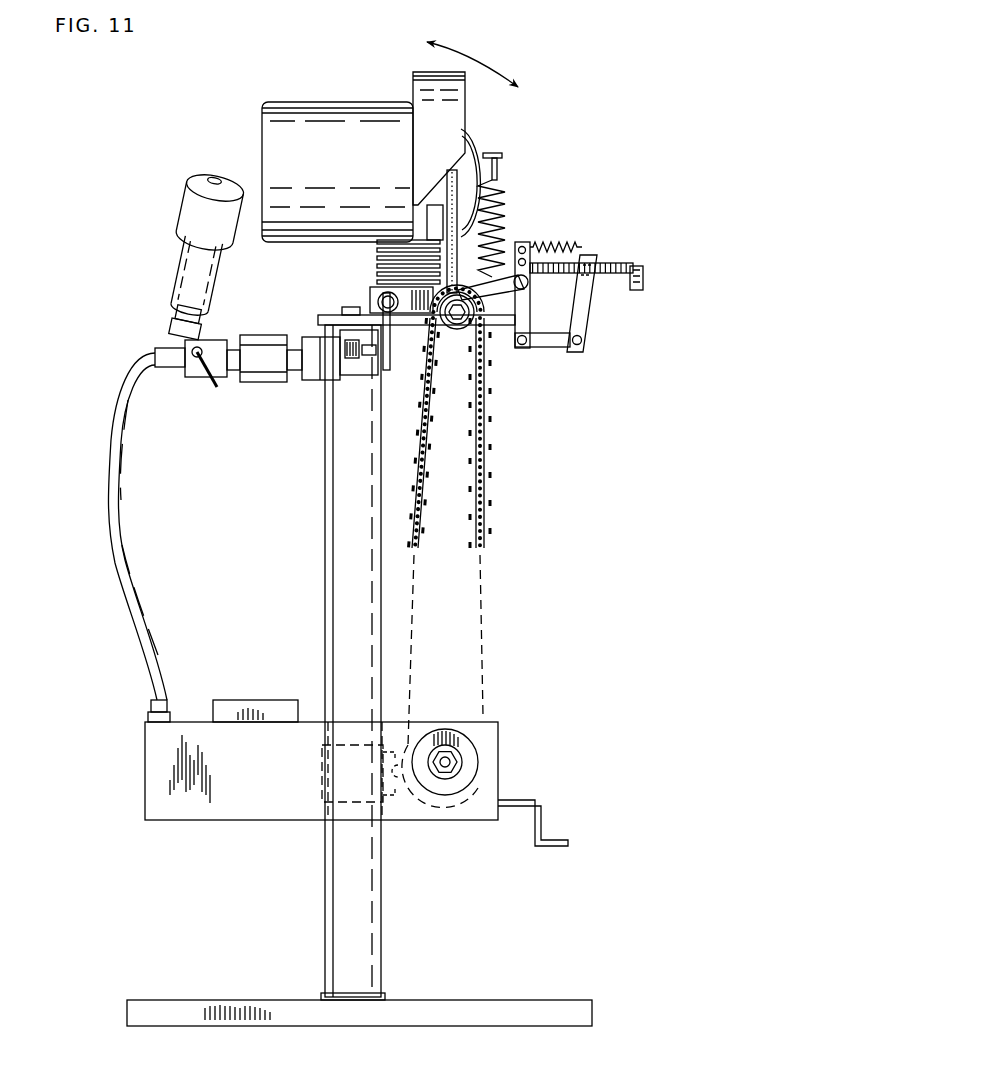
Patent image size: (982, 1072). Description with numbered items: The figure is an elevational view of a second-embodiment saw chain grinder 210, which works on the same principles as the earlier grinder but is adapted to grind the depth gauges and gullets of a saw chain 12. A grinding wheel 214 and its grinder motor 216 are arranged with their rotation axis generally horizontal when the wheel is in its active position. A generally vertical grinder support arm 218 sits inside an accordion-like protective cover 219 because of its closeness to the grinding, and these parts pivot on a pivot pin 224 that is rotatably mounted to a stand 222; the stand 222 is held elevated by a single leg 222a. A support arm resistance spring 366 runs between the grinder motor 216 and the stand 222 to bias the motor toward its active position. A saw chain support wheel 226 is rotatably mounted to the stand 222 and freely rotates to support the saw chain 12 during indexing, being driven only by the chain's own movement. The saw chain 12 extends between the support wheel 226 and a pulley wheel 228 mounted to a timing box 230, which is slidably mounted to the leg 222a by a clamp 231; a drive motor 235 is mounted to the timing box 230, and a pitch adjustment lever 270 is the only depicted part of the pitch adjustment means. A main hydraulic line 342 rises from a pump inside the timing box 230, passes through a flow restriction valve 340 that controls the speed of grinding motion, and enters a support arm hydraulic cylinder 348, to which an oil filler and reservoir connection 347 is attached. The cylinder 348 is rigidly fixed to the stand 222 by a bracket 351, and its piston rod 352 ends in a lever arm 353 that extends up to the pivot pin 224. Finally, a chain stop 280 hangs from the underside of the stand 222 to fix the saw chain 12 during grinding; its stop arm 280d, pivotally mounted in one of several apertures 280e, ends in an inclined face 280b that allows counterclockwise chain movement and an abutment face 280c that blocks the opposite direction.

The grinder 210 is at (528, 117).
The grinder motor 216 is at (362, 166).
The grinding wheel 214 is at (472, 250).
The support arm resistance spring 366 is at (503, 190).
The accordian-like protective cover 219 is at (380, 258).
The grinder support arm 218 is at (380, 282).
The pivot pin 224 is at (377, 302).
The stand 222 is at (333, 316).
The leg 222a is at (325, 500).
The lever arm 353 is at (390, 335).
The piston rod 352 is at (372, 372).
The bracket 351 is at (345, 350).
The support arm hydraulic cylinder 348 is at (265, 382).
The flow restriction valve 340 is at (197, 378).
The oil filler and reservoir connection 347 is at (220, 257).
The main hydraulic line 342 is at (112, 457).
The saw chain support wheel 226 is at (484, 420).
The saw chain 12 is at (484, 500).
The chain stop 280 is at (628, 243).
The inclined face 280b is at (500, 340).
The abutment face 280c is at (505, 245).
The stop arm 280d is at (475, 292).
The apertures 280e is at (530, 247).
The drive motor 235 is at (240, 700).
The timing box 230 is at (252, 833).
The clamp 231 is at (410, 810).
The pulley wheel 228 is at (471, 755).
The pitch adjustment lever 270 is at (557, 843).